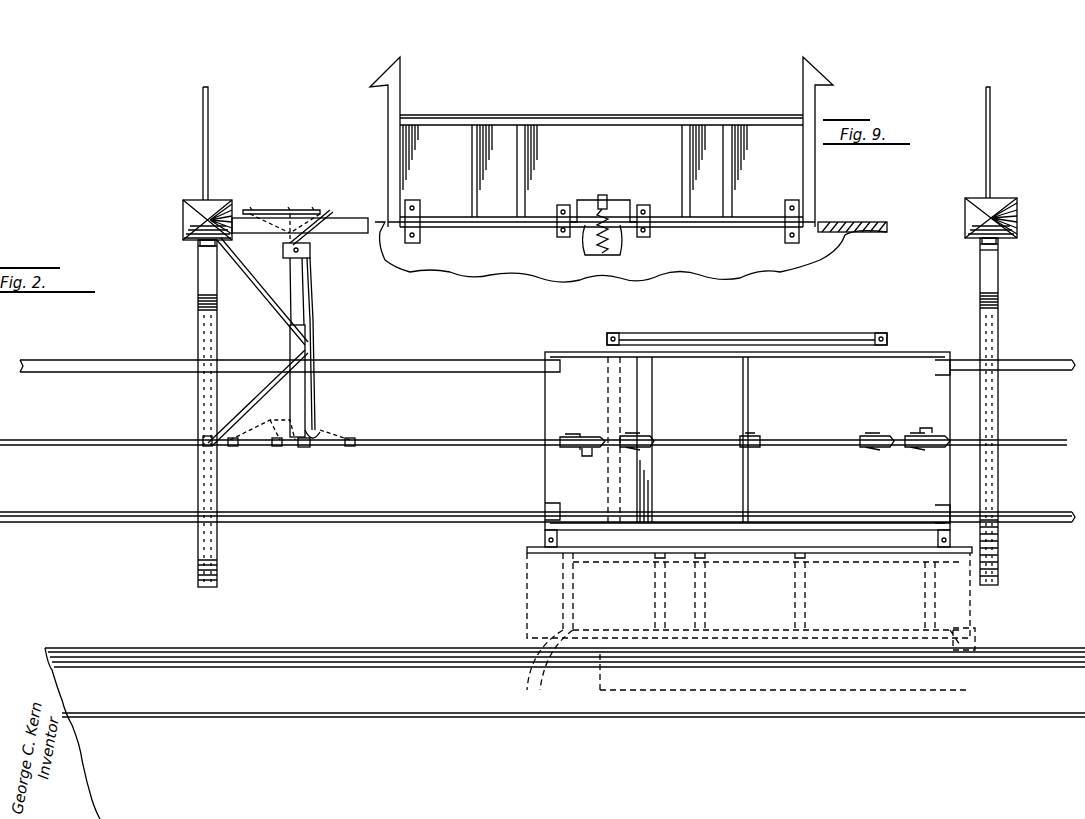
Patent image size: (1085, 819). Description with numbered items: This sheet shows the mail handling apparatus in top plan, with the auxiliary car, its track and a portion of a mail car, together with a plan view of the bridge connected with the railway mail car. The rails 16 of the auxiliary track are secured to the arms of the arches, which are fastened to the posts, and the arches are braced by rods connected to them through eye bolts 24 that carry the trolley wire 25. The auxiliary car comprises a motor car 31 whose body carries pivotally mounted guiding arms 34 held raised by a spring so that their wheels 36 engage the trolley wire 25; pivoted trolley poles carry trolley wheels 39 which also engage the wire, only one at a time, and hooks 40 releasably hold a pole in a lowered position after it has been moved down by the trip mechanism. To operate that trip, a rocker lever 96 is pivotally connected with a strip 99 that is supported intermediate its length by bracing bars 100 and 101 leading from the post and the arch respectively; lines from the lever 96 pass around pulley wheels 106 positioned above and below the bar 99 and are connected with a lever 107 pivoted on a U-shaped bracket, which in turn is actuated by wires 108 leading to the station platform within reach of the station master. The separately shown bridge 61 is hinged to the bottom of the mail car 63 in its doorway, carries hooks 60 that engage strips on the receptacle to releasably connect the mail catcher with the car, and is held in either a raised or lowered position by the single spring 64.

In FIG. 2, the rails 16 is at (374, 362).
In FIG. 2, the eye bolts 24 is at (205, 446).
In FIG. 2, the trolley wire 25 is at (70, 440).
In FIG. 2, the motor car 31 is at (910, 360).
In FIG. 2, the guiding arms 34 is at (765, 440).
In FIG. 2, the wheels 36 is at (640, 436).
In FIG. 2, the trolley wheels 39 is at (563, 436).
In FIG. 2, the hooks 40 is at (596, 452).
In FIG. 9, the hooks 60 is at (400, 87).
In FIG. 9, the bridge 61 is at (592, 125).
In FIG. 2, the mail car 63 is at (338, 650).
In FIG. 9, the mail car 63 is at (838, 240).
In FIG. 9, the spring 64 is at (585, 240).
In FIG. 2, the rocker lever 96 is at (315, 356).
In FIG. 2, the strip 99 is at (296, 396).
In FIG. 2, the bracing bar 100 is at (246, 276).
In FIG. 2, the bracing bar 101 is at (268, 366).
In FIG. 2, the pulley wheels 106 is at (311, 251).
In FIG. 2, the lever 107 is at (288, 210).
In FIG. 2, the wires 108 is at (330, 210).